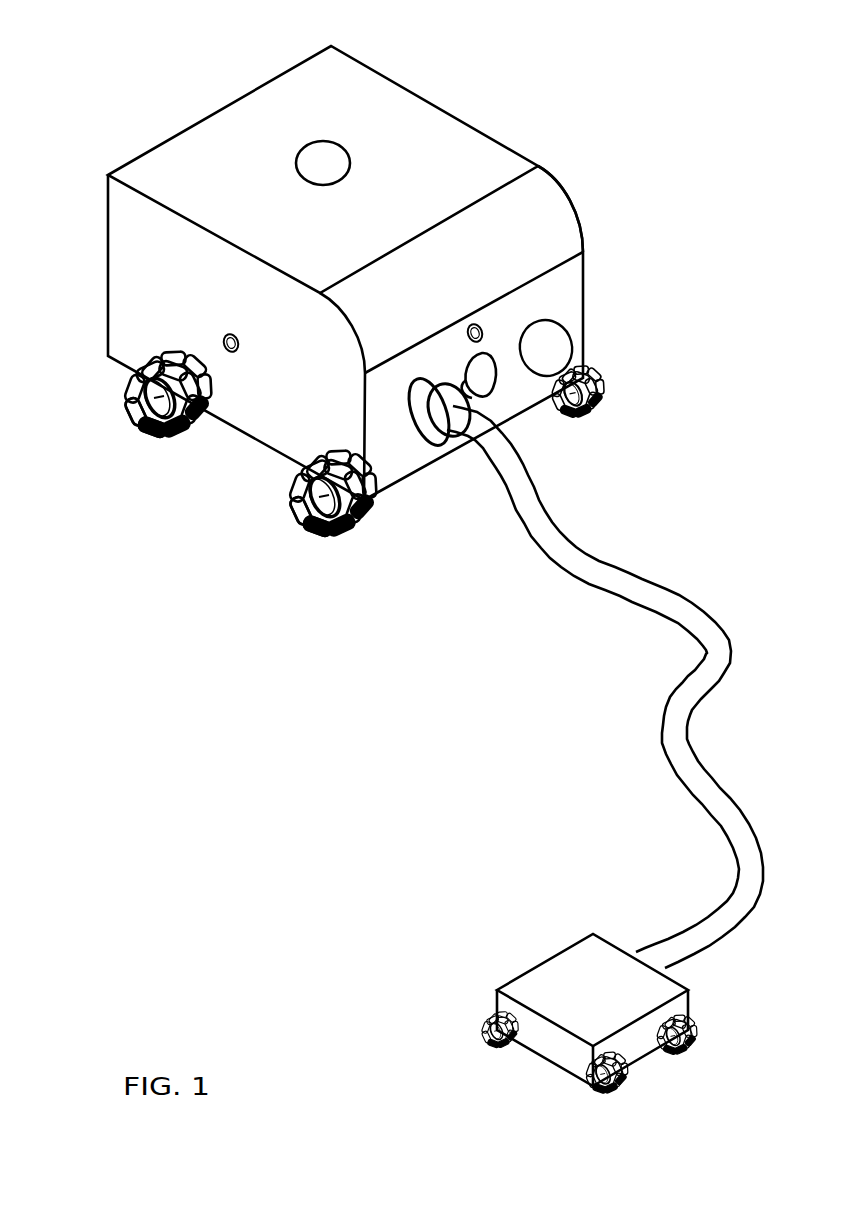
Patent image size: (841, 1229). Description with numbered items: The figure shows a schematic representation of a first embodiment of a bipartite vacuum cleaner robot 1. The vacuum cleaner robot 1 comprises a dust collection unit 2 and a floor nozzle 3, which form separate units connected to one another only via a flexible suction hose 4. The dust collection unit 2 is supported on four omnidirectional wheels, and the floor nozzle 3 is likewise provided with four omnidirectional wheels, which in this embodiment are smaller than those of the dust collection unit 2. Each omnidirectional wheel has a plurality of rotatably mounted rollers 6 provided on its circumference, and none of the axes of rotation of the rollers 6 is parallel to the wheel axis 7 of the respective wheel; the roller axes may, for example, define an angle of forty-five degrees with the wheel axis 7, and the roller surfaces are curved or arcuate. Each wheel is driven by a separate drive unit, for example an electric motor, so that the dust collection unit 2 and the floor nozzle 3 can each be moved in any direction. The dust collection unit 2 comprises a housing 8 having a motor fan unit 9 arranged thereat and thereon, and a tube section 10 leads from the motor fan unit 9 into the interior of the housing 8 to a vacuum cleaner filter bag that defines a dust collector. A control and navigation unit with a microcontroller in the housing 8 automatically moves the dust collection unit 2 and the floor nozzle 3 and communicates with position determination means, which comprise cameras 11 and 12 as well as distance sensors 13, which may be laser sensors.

The vacuum cleaner robot 1 is at (237, 745).
The dust collection unit 2 is at (154, 123).
The floor nozzle 3 is at (528, 956).
The flexible suction hose 4 is at (670, 580).
The roller 6 is at (157, 432).
The wheel axis 7 is at (120, 388).
The housing 8 is at (490, 137).
The motor fan unit 9 is at (437, 440).
The tube section 10 is at (493, 390).
The camera 11 is at (332, 155).
The camera 12 is at (560, 325).
The distance sensor 13 is at (229, 335).